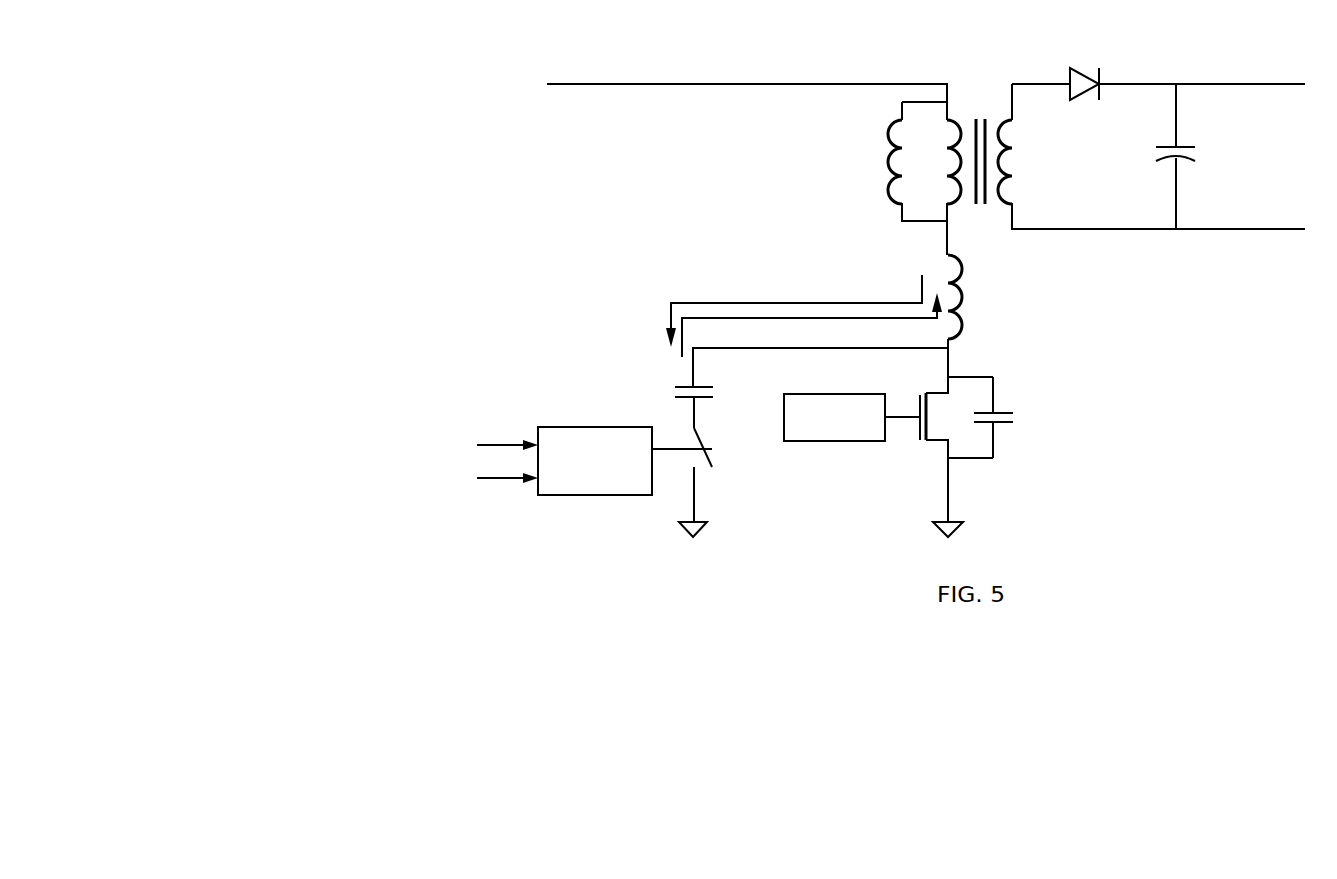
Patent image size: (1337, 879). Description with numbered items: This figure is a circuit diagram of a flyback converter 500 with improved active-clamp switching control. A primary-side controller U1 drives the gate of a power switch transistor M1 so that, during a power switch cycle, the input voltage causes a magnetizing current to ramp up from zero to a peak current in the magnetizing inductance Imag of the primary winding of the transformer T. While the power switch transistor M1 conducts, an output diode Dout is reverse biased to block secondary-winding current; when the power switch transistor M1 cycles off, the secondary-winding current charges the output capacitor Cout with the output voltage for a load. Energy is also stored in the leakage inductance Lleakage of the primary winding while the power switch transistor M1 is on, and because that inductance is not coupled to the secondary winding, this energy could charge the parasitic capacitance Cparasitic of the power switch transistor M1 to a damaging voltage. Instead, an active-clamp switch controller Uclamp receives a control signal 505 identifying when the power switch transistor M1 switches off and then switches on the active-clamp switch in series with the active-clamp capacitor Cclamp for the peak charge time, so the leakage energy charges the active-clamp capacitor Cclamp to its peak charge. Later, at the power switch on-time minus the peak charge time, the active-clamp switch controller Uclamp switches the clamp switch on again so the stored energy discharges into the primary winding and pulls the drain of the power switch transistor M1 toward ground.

The flyback converter 500 is at (441, 113).
The control signal 505 is at (339, 428).
The transformer T is at (979, 136).
The magnetizing inductance Imag is at (894, 161).
The leakage inductance Lleakage is at (1004, 297).
The output diode Dout is at (1086, 68).
The output capacitor Cout is at (1202, 154).
The active-clamp capacitor Cclamp is at (654, 392).
The active-clamp switch controller Uclamp is at (595, 461).
The primary-side controller U1 is at (834, 417).
The power switch transistor M1 is at (928, 435).
The parasitic capacitance Cparasitic is at (1053, 415).